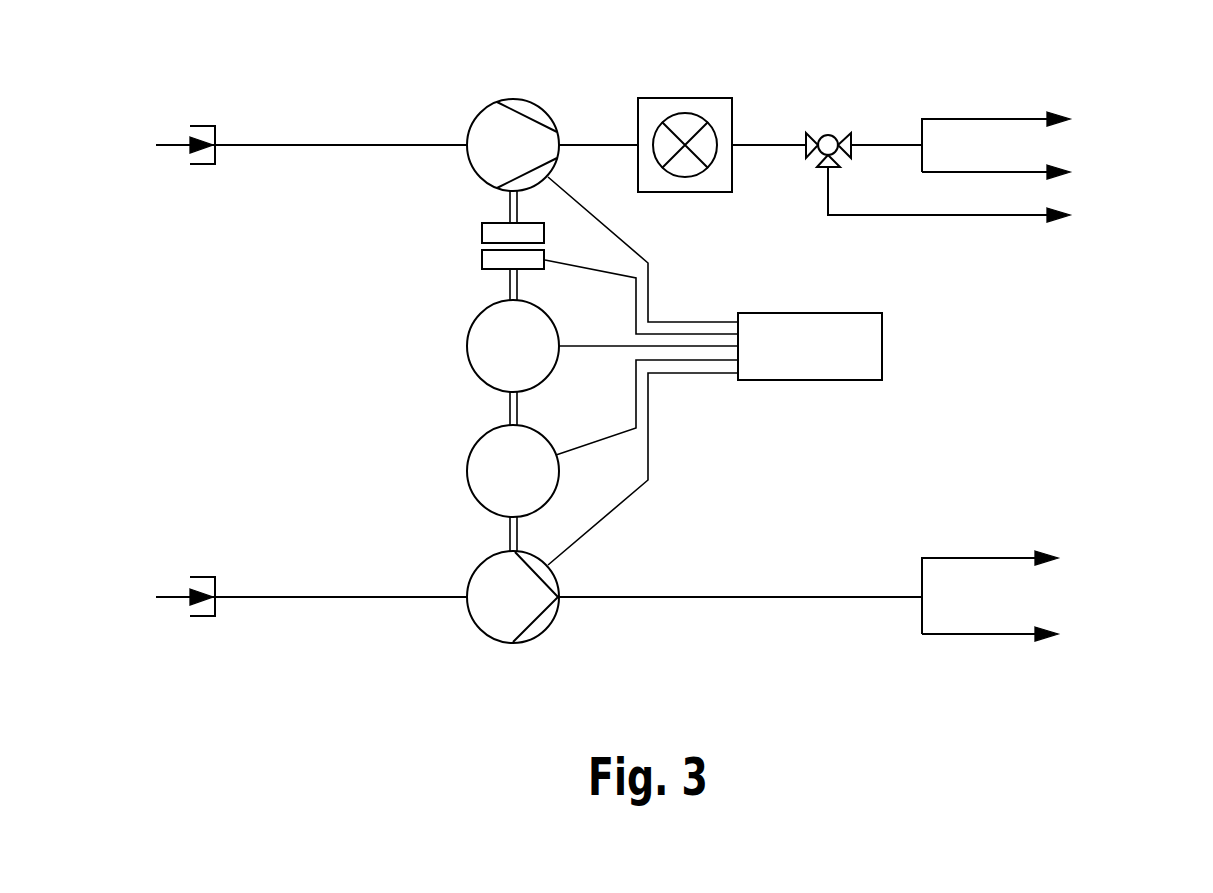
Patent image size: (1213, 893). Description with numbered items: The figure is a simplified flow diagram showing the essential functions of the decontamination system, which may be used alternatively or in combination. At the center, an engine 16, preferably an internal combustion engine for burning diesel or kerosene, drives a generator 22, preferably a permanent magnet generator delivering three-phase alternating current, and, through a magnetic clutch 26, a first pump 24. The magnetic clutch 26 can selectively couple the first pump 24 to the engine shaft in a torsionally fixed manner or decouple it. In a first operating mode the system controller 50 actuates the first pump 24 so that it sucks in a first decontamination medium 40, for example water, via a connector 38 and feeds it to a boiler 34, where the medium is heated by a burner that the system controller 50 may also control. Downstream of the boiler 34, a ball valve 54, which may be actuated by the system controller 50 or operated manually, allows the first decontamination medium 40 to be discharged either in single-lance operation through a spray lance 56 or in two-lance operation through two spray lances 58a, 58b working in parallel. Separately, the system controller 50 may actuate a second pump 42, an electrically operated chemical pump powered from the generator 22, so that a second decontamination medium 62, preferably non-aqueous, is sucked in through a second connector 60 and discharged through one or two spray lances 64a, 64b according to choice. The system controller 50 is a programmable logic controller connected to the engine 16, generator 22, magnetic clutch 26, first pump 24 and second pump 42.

The engine 16 is at (467, 346).
The generator 22 is at (467, 471).
The first pump 24 is at (512, 98).
The magnetic clutch 26 is at (482, 259).
The boiler 34 is at (684, 98).
The connector 38 is at (205, 166).
The first decontamination medium 40 is at (163, 143).
The second pump 42 is at (512, 644).
The system controller 50 is at (884, 345).
The ball valve 54 is at (826, 133).
The spray lance 56 is at (1072, 211).
The spray lance 58a is at (1072, 116).
The spray lance 58b is at (1072, 167).
The second connector 60 is at (205, 618).
The second decontamination medium 62 is at (163, 595).
The spray lance 64a is at (1060, 555).
The spray lance 64b is at (1060, 631).